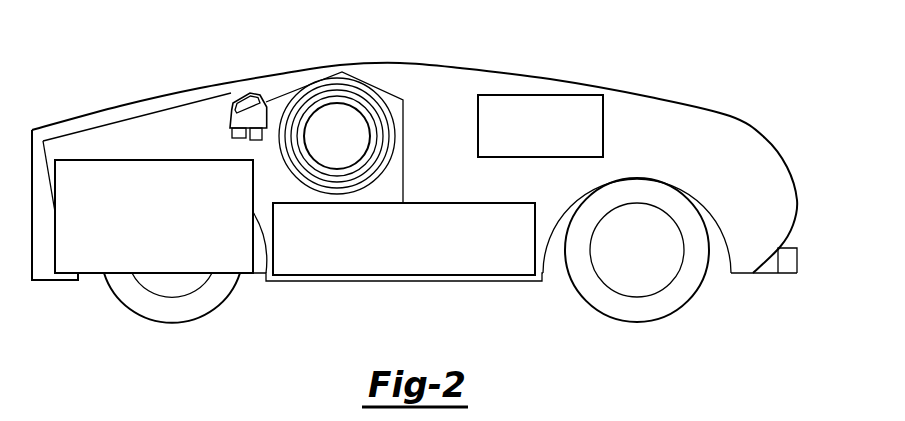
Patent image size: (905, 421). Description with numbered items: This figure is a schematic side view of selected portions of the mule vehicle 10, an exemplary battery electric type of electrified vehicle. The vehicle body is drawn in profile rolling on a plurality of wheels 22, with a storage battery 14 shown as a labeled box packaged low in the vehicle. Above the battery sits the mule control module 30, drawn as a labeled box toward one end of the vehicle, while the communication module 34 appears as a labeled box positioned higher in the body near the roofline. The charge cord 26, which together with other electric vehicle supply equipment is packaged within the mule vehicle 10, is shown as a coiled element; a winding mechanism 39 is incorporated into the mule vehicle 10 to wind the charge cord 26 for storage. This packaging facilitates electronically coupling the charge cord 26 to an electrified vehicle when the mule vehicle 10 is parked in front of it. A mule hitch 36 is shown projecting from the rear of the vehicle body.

The mule vehicle 10 is at (659, 59).
The storage battery 14 is at (392, 264).
The wheels 22 is at (677, 310).
The charge cord 26 is at (353, 88).
The mule control module 30 is at (141, 258).
The communication module 34 is at (540, 95).
The mule hitch 36 is at (797, 260).
The winding mechanism 39 is at (337, 137).